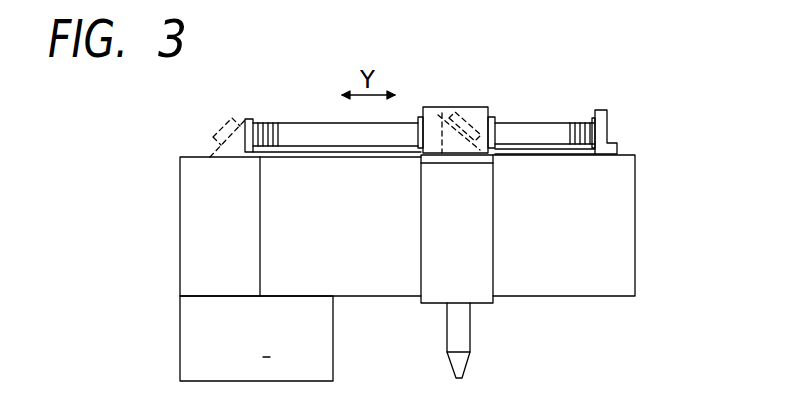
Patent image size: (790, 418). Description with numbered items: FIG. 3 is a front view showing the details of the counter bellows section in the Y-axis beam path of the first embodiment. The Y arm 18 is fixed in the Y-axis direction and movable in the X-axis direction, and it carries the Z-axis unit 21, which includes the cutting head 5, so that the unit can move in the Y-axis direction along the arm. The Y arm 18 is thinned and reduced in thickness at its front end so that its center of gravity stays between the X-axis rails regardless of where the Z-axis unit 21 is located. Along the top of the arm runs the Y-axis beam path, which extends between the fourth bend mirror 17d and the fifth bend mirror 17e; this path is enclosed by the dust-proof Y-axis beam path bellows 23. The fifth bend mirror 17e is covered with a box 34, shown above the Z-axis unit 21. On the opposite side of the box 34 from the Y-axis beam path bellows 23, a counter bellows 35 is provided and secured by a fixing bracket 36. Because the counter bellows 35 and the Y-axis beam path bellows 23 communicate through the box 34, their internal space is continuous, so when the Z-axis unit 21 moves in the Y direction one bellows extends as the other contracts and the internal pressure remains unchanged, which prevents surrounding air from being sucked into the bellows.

The cutting head 5 is at (462, 335).
The fourth bend mirror 17d is at (224, 126).
The fifth bend mirror 17e is at (475, 127).
The Y arm 18 is at (623, 192).
The Z-axis unit 21 is at (437, 236).
The Y-axis beam path bellows 23 is at (312, 137).
The box 34 is at (433, 120).
The counter bellows 35 is at (542, 132).
The fixing bracket 36 is at (603, 127).